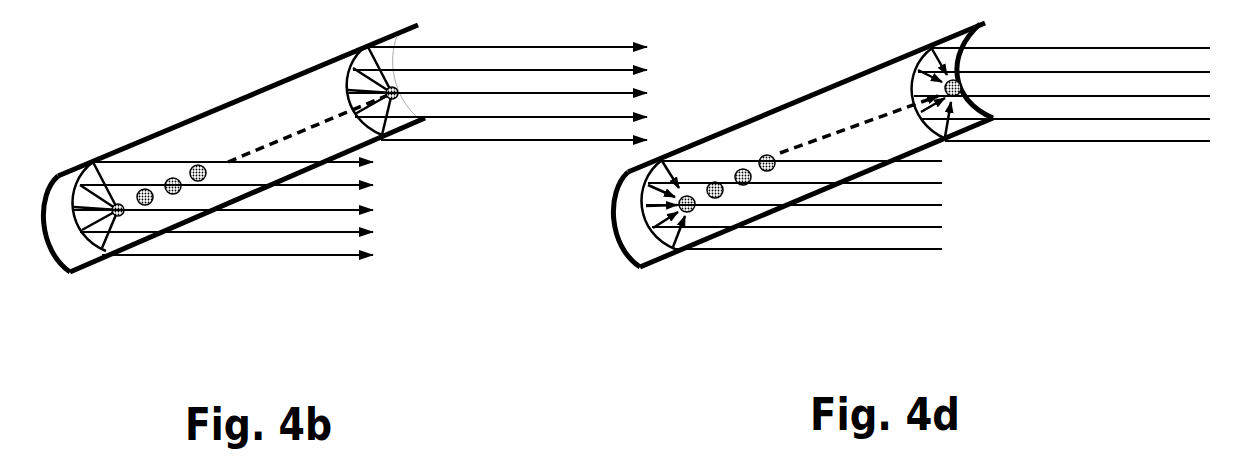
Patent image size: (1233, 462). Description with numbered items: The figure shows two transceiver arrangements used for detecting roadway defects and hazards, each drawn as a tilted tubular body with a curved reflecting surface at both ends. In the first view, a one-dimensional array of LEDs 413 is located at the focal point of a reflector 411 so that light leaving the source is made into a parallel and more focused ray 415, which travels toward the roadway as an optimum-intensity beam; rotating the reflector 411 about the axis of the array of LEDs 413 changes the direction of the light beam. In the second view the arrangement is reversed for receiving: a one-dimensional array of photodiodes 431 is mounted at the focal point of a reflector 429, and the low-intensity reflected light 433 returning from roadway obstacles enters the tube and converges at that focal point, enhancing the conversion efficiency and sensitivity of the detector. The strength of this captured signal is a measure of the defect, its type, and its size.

In FIG. 4B, the reflector 411 is at (66, 278).
In FIG. 4B, the 1D array of LEDs 413 is at (118, 218).
In FIG. 4B, the parallel focused light ray 415 is at (313, 257).
In FIG. 4D, the reflector 429 is at (640, 270).
In FIG. 4D, the light detector 431 is at (687, 213).
In FIG. 4D, the incoming light rays 433 is at (878, 251).